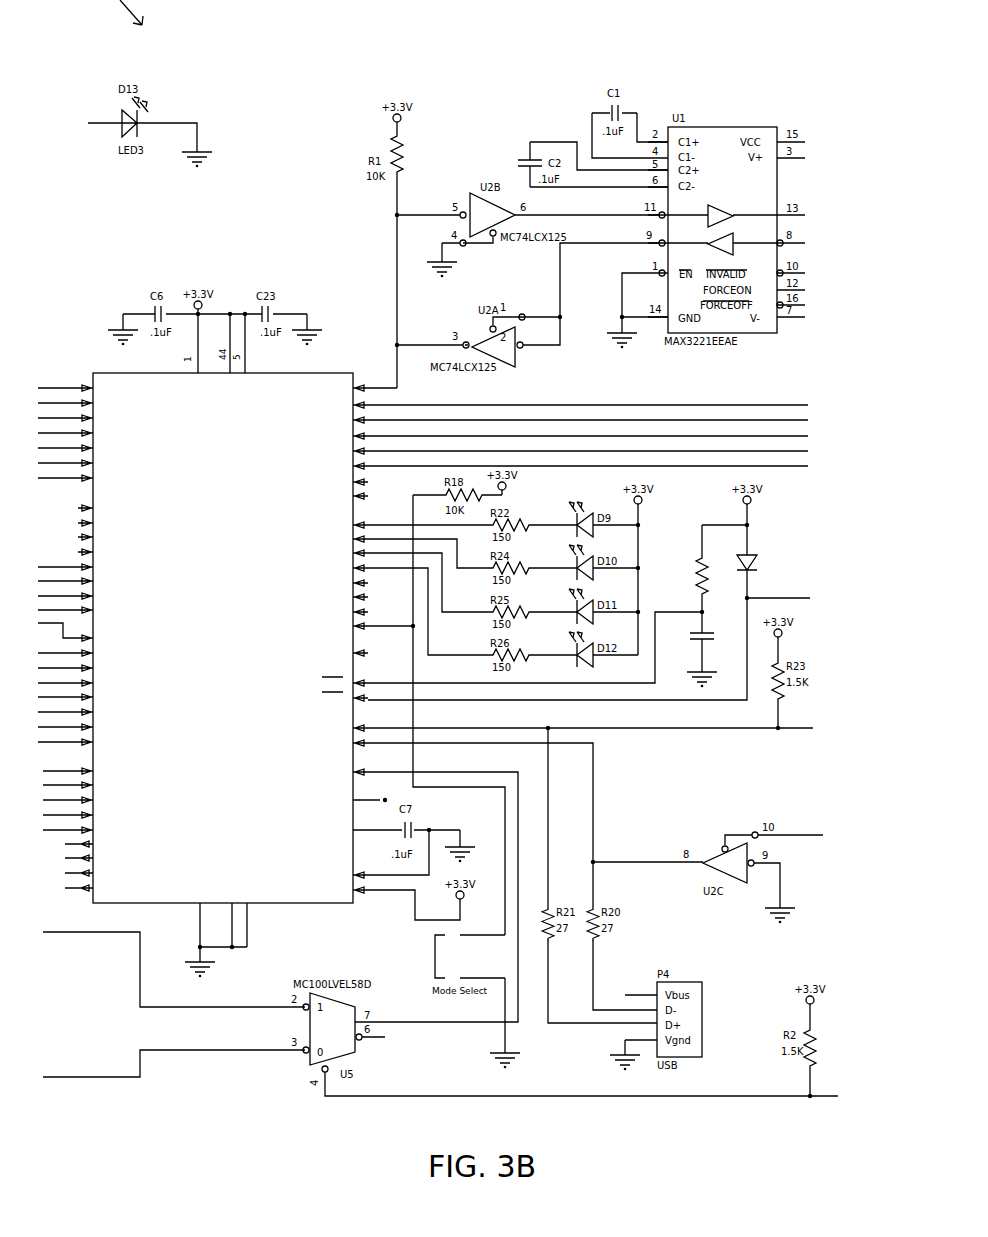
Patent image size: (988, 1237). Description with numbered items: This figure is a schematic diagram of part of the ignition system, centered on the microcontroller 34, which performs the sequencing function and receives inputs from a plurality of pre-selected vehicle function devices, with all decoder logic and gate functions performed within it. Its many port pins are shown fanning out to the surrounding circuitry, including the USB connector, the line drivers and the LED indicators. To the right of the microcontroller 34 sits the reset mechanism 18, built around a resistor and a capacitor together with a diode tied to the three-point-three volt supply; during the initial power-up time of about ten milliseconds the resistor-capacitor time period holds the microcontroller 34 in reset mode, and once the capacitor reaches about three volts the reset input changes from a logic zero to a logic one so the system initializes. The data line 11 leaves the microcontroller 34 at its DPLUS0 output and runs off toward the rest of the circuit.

The microcontroller 34 is at (212, 668).
The reset mechanism 18 is at (685, 587).
The data line 11 is at (590, 722).